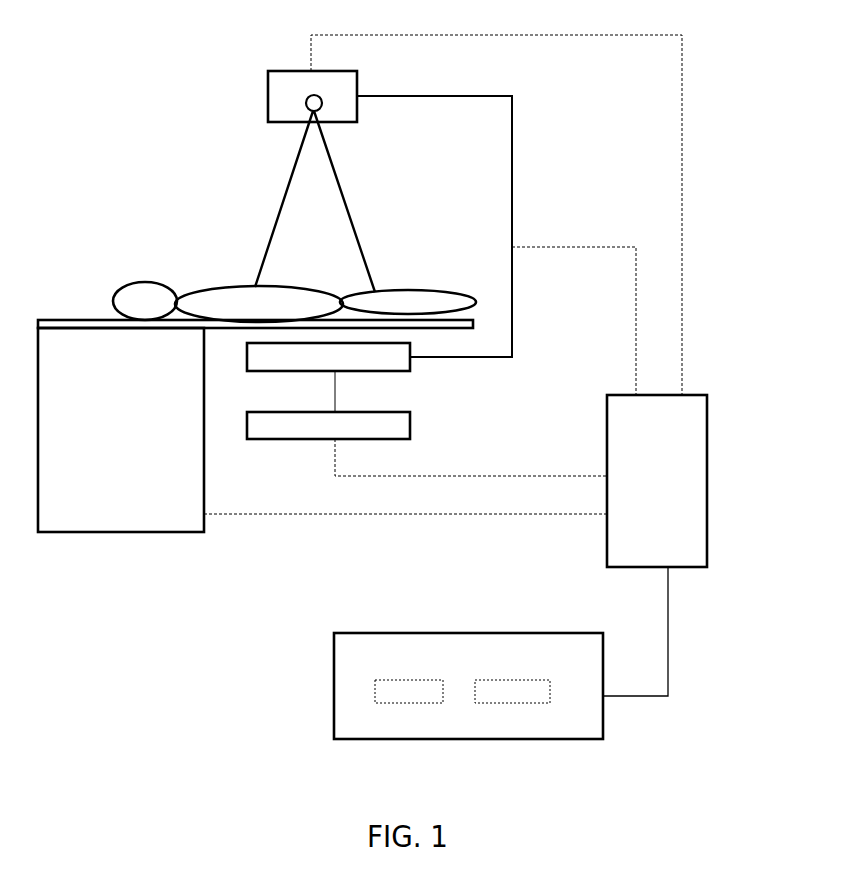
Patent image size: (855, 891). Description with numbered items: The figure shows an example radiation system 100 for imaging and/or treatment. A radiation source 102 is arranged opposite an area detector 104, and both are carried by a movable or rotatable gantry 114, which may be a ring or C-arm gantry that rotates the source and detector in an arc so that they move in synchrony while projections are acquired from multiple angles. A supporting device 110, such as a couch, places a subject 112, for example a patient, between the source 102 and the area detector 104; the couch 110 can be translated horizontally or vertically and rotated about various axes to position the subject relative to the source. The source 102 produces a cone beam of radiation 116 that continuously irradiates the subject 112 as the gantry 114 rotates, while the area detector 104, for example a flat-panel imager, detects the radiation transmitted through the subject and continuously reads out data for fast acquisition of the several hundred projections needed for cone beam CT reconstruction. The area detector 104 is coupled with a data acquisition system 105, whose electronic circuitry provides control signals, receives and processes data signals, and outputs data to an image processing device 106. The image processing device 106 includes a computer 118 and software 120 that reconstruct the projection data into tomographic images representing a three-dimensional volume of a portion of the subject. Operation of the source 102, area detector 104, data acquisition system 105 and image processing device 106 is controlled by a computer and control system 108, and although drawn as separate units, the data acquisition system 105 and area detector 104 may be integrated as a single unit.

The radiation system 100 is at (125, 646).
The radiation source 102 is at (283, 70).
The area detector 104 is at (390, 372).
The data acquisition system 105 is at (395, 440).
The image processing device 106 is at (451, 633).
The computer and control system 108 is at (708, 480).
The supporting device 110 is at (172, 533).
The subject 112 is at (225, 283).
The gantry 114 is at (537, 159).
The cone beam of radiation 116 is at (348, 200).
The computer 118 is at (400, 680).
The software 120 is at (505, 680).